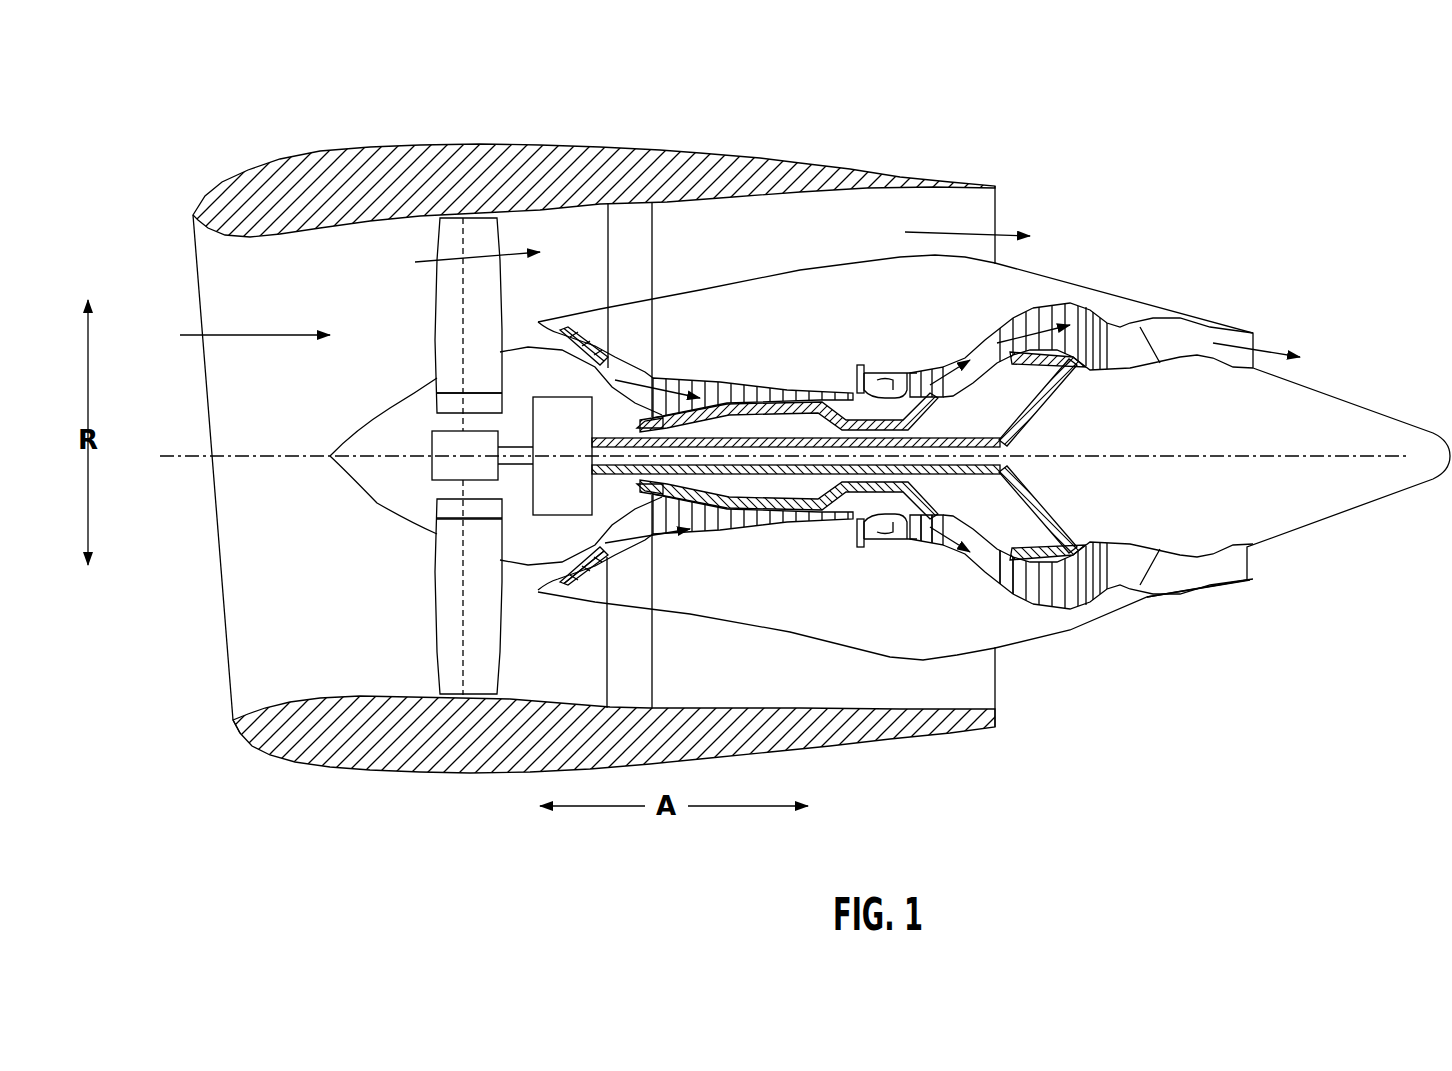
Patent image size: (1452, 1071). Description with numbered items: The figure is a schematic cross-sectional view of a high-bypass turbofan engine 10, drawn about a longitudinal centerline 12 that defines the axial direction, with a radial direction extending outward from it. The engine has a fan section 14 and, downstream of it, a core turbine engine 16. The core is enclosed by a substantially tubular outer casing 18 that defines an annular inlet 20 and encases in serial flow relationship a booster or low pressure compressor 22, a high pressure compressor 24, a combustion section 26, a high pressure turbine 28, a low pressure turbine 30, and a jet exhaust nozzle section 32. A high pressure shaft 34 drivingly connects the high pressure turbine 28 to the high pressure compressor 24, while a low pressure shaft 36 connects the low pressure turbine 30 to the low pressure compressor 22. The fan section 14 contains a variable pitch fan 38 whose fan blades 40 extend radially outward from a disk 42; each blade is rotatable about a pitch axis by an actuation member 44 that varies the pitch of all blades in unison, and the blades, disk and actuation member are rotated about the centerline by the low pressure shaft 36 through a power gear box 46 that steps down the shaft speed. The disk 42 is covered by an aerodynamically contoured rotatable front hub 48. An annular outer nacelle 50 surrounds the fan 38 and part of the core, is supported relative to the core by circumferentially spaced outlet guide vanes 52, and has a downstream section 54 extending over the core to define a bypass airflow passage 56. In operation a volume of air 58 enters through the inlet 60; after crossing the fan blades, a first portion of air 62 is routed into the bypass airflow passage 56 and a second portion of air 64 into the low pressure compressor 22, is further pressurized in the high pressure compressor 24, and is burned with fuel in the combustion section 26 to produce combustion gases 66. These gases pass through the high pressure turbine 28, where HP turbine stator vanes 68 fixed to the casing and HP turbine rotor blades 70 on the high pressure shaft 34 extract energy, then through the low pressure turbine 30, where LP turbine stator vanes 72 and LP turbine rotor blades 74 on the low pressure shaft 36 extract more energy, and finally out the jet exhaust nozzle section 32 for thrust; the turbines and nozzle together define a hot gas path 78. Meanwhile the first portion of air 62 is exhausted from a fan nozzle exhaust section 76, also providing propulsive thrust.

The turbofan engine 10 is at (1163, 157).
The longitudinal centerline 12 is at (1195, 455).
The fan section 14 is at (400, 232).
The core turbine engine 16 is at (808, 333).
The outer casing 18 is at (813, 637).
The annular inlet 20 is at (555, 575).
The low pressure compressor 22 is at (606, 545).
The high pressure compressor 24 is at (690, 530).
The combustion section 26 is at (877, 545).
The high pressure turbine 28 is at (953, 535).
The low pressure turbine 30 is at (1080, 607).
The jet exhaust nozzle section 32 is at (1162, 583).
The high pressure shaft 34 is at (883, 427).
The low pressure shaft 36 is at (957, 430).
The variable pitch fan 38 is at (372, 502).
The fan blades 40 is at (435, 607).
The disk 42 is at (437, 392).
The actuation member 44 is at (430, 442).
The power gear box 46 is at (578, 413).
The front hub 48 is at (222, 513).
The outer nacelle 50 is at (472, 770).
The outlet guide vanes 52 is at (653, 222).
The downstream section 54 is at (940, 180).
The bypass airflow passage 56 is at (925, 235).
The volume of air 58 is at (248, 333).
The inlet 60 is at (232, 697).
The first portion of air 62 is at (447, 257).
The second portion of air 64 is at (520, 335).
The combustion gases 66 is at (1043, 310).
The HP turbine stator vanes 68 is at (902, 543).
The HP turbine rotor blades 70 is at (917, 543).
The LP turbine stator vanes 72 is at (1000, 577).
The LP turbine rotor blades 74 is at (1017, 583).
The fan nozzle exhaust section 76 is at (983, 208).
The hot gas path 78 is at (980, 347).